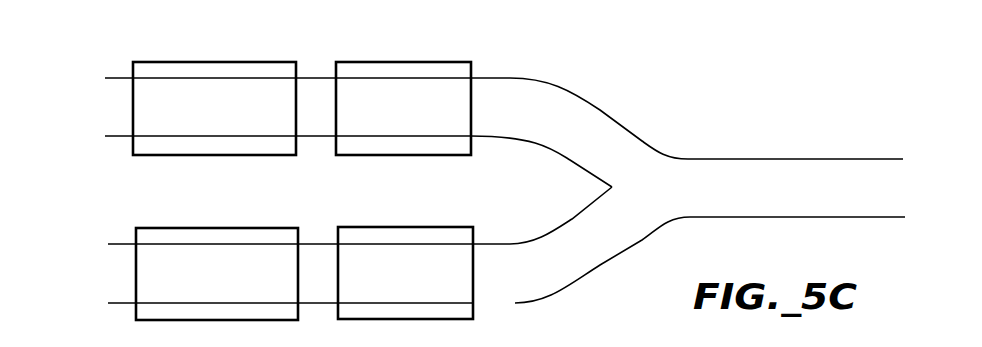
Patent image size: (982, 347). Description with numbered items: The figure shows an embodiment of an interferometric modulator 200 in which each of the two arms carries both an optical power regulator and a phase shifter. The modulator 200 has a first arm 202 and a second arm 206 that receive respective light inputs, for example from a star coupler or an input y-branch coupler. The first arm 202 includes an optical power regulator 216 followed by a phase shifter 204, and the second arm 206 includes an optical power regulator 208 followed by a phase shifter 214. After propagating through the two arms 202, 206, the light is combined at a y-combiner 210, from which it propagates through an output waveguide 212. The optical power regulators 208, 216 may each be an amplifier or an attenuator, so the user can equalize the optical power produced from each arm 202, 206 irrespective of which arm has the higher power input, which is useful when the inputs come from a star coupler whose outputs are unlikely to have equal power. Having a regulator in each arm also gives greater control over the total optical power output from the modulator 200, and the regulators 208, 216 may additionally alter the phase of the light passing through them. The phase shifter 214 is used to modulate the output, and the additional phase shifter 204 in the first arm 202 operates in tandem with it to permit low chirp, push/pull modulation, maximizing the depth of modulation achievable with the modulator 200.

The interferometric modulator 200 is at (605, 83).
The first arm 202 is at (113, 118).
The phase shifter 204 is at (408, 62).
The second arm 206 is at (117, 287).
The optical power regulator 208 is at (214, 228).
The y-combiner 210 is at (645, 163).
The output waveguide 212 is at (827, 166).
The phase shifter 214 is at (410, 228).
The optical power regulator 216 is at (221, 62).